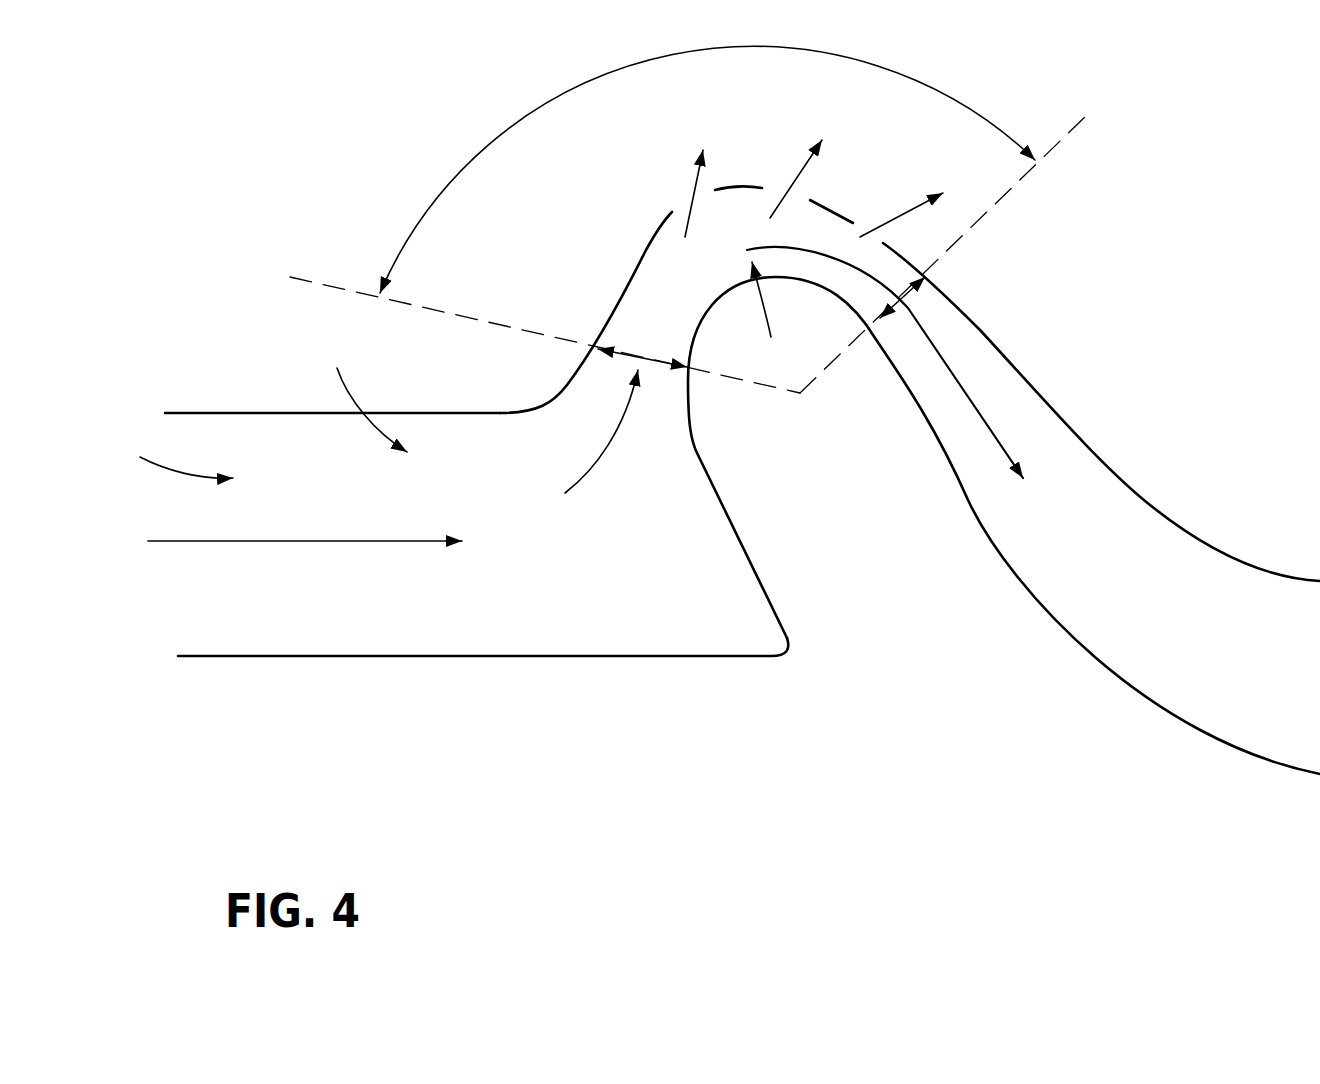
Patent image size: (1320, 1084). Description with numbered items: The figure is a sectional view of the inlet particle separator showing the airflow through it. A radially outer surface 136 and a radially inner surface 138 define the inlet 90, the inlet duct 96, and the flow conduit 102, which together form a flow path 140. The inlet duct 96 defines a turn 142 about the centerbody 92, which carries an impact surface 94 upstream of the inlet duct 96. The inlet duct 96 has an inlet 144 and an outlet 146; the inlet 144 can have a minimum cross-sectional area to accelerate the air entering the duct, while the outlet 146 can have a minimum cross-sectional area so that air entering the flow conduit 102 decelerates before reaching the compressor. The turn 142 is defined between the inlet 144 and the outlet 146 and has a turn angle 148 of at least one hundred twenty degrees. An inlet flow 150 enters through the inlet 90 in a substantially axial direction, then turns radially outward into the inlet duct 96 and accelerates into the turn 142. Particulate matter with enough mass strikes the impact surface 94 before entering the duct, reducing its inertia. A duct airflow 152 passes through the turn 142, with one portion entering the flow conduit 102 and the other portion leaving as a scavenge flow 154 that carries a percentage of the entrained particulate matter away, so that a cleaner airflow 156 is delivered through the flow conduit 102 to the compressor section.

The inlet 90 is at (168, 460).
The centerbody 92 is at (840, 517).
The impact surface 94 is at (700, 455).
The inlet duct 96 is at (660, 280).
The flow conduit 102 is at (1143, 555).
The radially outer surface 136 is at (263, 412).
The radially inner surface 138 is at (713, 657).
The flow path 140 is at (360, 398).
The turn 142 is at (777, 312).
The inlet 144 is at (637, 353).
The outlet 146 is at (903, 305).
The turn angle 148 is at (543, 102).
The inlet flow 150 is at (247, 542).
The duct airflow 152 is at (623, 402).
The scavenge flow 154 is at (697, 178).
The cleaner airflow 156 is at (950, 360).